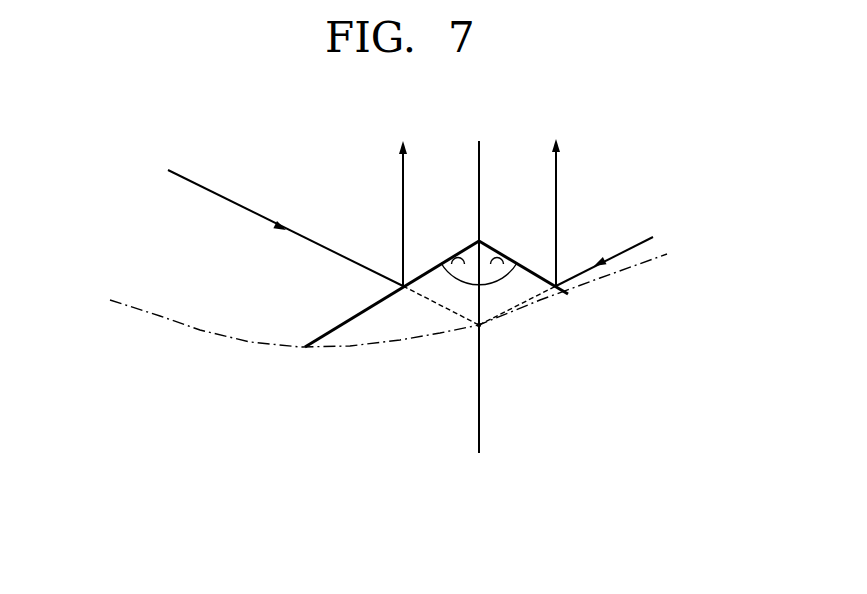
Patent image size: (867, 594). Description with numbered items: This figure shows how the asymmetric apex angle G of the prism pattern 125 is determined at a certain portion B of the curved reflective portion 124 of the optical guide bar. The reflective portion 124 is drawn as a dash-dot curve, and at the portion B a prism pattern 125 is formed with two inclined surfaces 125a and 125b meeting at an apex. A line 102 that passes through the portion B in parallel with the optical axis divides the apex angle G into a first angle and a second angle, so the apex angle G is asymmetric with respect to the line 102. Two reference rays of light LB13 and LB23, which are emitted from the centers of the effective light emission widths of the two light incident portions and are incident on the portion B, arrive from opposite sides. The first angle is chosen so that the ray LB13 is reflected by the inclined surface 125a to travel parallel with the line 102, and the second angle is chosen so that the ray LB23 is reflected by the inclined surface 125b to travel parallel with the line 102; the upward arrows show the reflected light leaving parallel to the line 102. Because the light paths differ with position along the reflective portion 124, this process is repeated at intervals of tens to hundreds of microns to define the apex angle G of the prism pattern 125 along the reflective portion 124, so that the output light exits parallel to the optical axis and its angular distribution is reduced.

The line 102 is at (477, 400).
The reflective portion 124 is at (240, 338).
The prism pattern 125 is at (429, 280).
The inclined surface 125a is at (540, 273).
The inclined surface 125b is at (350, 315).
The reference ray of light LB23 is at (243, 205).
The reference ray of light LB13 is at (630, 247).
The portion B is at (489, 340).
The apex angle G is at (503, 278).